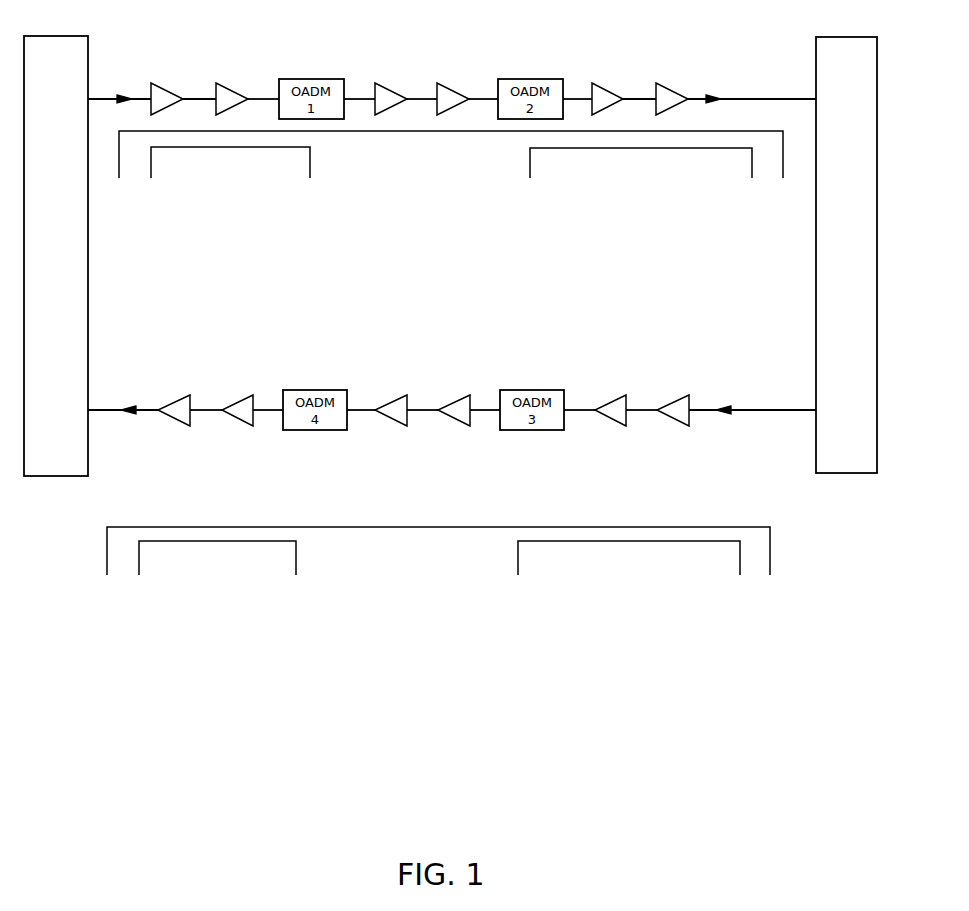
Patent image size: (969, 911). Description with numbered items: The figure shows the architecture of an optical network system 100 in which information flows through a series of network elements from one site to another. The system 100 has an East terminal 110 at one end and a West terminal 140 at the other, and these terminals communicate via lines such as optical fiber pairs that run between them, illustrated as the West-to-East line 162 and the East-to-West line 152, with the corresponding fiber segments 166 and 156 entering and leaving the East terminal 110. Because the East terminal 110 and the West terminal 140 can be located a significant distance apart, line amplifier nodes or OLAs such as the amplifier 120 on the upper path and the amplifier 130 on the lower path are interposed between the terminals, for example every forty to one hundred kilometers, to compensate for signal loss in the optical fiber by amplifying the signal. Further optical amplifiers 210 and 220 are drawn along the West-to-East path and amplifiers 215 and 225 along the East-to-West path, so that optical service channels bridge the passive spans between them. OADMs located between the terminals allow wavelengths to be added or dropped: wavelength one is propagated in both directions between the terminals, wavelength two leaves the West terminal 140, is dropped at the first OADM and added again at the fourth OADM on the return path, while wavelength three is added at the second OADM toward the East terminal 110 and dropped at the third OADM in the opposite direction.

The system 100 is at (204, 311).
The East terminal 110 is at (852, 474).
The line amplifier node 120 is at (175, 86).
The line amplifier node 130 is at (172, 424).
The West terminal 140 is at (68, 477).
The line 152 is at (110, 412).
The east-to-west fiber path at east terminal 156 is at (777, 412).
The line 162 is at (110, 97).
The west-to-east fiber path at east terminal 166 is at (770, 97).
The optical amplifier 210 is at (398, 86).
The amplifier 215 is at (387, 418).
The optical amplifier 220 is at (460, 86).
The optical amplifier 225 is at (449, 418).